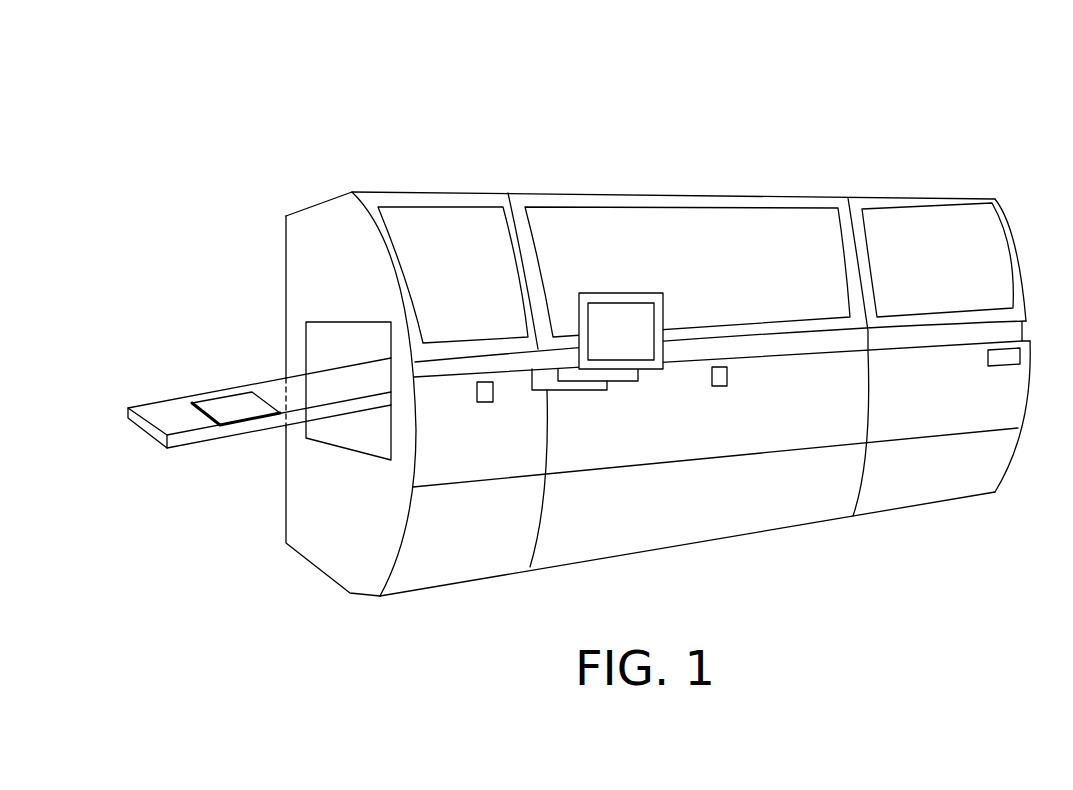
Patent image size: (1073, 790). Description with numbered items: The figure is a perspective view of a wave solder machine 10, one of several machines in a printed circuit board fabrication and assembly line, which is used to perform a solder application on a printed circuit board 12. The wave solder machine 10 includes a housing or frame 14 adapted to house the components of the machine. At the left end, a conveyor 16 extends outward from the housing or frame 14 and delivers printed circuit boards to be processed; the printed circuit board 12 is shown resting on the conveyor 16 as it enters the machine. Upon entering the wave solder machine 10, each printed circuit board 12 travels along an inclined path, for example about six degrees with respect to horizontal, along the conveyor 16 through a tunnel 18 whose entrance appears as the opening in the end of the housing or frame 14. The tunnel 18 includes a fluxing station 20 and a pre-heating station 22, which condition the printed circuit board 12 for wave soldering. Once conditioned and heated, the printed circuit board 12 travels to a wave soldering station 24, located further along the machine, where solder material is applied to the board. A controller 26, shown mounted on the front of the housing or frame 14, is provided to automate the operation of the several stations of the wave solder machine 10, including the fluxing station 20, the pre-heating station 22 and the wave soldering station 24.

The wave solder machine 10 is at (874, 132).
The printed circuit board 12 is at (227, 407).
The housing or frame 14 is at (1028, 392).
The conveyor 16 is at (140, 432).
The tunnel 18 is at (338, 339).
The fluxing station 20 is at (440, 236).
The pre-heating station 22 is at (586, 232).
The wave soldering station 24 is at (968, 233).
The controller 26 is at (663, 312).